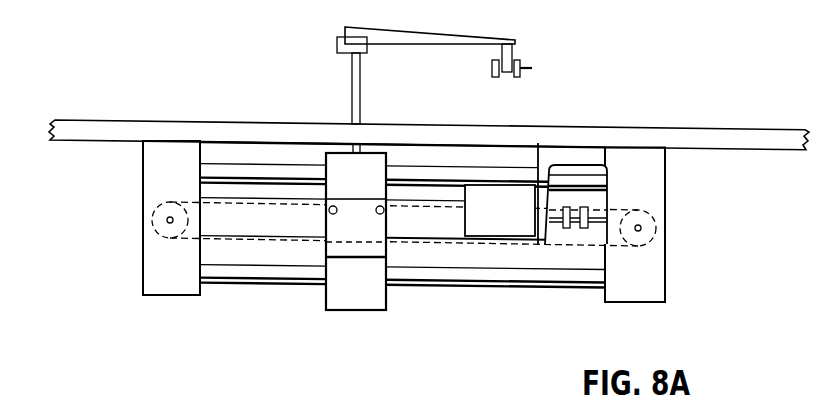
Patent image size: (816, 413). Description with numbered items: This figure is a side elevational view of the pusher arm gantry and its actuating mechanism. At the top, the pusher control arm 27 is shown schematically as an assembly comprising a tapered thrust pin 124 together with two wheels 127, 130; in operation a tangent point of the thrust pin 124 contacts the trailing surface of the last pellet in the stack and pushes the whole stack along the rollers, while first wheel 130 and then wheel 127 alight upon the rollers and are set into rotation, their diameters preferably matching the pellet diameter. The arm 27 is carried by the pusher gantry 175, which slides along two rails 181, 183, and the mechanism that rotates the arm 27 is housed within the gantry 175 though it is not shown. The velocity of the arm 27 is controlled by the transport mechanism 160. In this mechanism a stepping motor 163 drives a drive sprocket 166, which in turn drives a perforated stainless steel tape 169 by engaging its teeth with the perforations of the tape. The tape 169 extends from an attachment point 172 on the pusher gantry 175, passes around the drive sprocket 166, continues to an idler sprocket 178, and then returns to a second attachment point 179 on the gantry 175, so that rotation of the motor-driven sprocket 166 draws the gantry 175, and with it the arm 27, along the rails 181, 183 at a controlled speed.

The pusher control arm 27 is at (422, 74).
The tapered thrust pin 124 is at (533, 69).
The wheel 127 is at (492, 68).
The wheel 130 is at (518, 61).
The transport mechanism 160 is at (361, 216).
The stepping motor 163 is at (512, 235).
The drive sprocket 166 is at (660, 228).
The perforated stainless steel tape 169 is at (448, 210).
The attachment point 172 is at (386, 211).
The pusher gantry 175 is at (367, 165).
The idler sprocket 178 is at (157, 237).
The second attachment point 179 is at (328, 212).
The rail 181 is at (268, 272).
The rail 183 is at (248, 173).